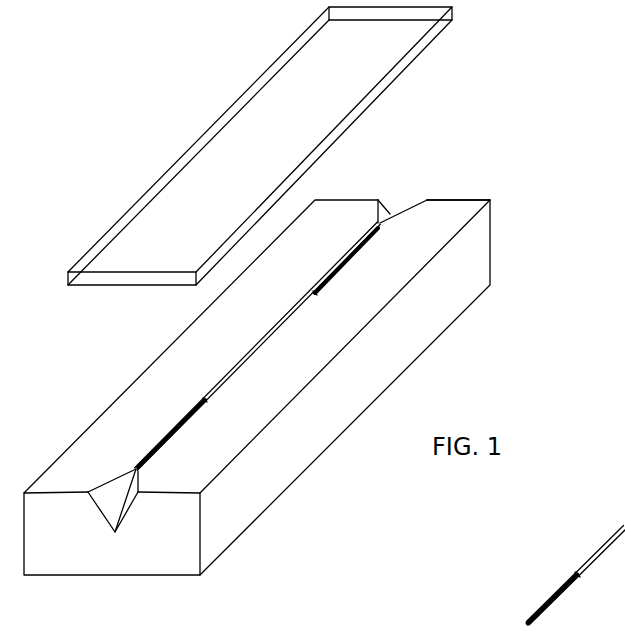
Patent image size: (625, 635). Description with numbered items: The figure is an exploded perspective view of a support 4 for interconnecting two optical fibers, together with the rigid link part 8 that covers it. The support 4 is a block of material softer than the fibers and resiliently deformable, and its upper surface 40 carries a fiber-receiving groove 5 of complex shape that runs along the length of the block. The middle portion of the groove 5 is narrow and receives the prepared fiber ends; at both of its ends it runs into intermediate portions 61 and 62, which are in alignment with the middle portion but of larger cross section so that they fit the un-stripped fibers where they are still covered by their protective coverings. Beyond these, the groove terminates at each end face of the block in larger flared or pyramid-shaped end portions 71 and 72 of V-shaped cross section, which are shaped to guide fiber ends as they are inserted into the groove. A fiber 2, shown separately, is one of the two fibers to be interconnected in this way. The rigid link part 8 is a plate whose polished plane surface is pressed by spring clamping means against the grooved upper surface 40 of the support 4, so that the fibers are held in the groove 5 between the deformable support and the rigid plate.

The fiber 2 is at (555, 603).
The support 4 is at (467, 258).
The fiber-receiving groove 5 is at (248, 354).
The rigid link part 8 is at (418, 48).
The upper surface 40 is at (449, 222).
The intermediate portion 61 is at (167, 432).
The intermediate portion 62 is at (370, 245).
The flared end portion 71 is at (107, 500).
The flared end portion 72 is at (382, 213).